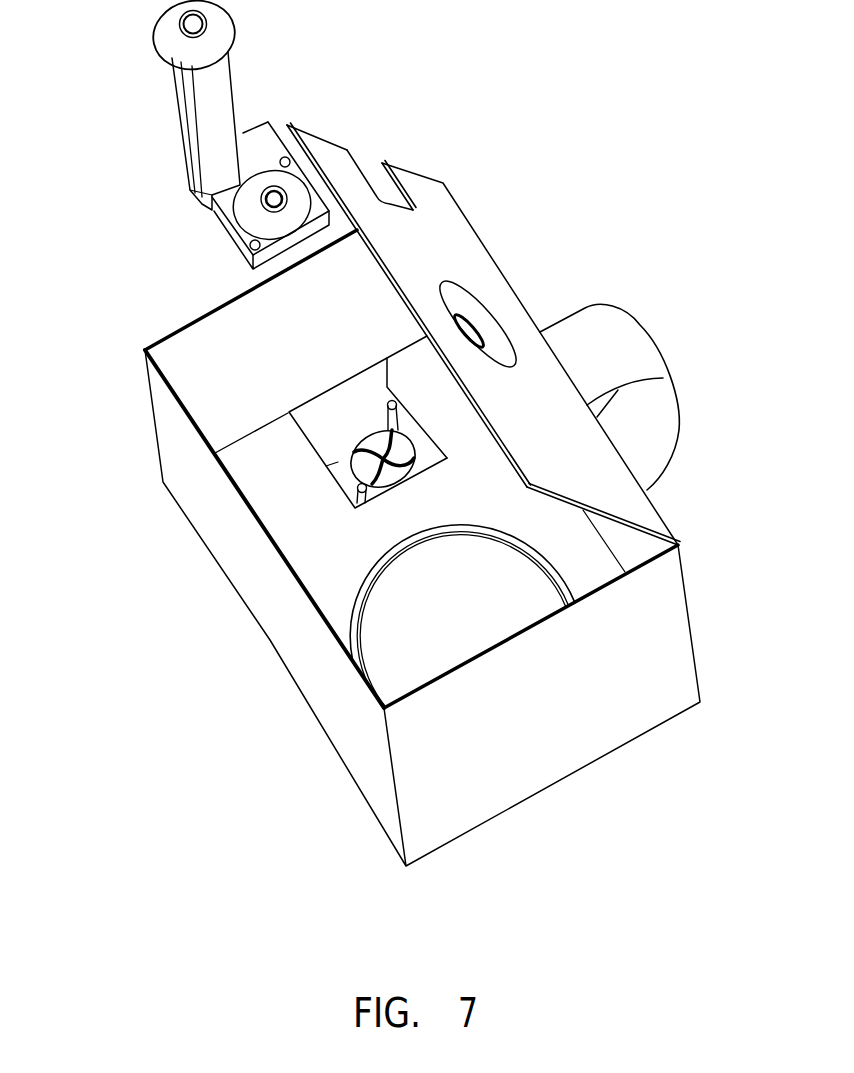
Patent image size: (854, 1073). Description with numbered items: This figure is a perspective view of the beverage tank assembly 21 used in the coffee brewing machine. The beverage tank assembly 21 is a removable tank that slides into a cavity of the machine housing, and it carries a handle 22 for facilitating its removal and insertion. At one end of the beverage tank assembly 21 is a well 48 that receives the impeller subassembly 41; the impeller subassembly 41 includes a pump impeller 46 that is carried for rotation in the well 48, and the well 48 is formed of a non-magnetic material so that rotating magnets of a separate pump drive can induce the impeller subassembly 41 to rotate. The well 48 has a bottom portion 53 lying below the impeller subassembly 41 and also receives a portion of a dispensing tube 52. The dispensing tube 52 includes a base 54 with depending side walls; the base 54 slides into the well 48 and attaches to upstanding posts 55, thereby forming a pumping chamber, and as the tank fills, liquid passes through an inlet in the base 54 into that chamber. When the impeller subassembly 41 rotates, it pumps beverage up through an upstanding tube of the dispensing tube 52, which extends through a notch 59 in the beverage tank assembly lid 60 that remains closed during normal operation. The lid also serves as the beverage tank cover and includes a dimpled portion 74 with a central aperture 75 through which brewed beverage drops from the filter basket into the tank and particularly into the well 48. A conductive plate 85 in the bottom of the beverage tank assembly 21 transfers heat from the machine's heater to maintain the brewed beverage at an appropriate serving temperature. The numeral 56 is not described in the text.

The beverage tank assembly 21 is at (343, 673).
The handle 22 is at (623, 345).
The impeller subassembly 41 is at (345, 443).
The pump impeller 46 is at (330, 465).
The well 48 is at (370, 508).
The dispensing tube 52 is at (220, 113).
The bottom portion 53 is at (353, 474).
The base 54 is at (240, 213).
The upstanding posts 55 is at (343, 423).
The ring fitting 56 is at (263, 196).
The notch 59 is at (390, 200).
The beverage tank assembly lid 60 is at (452, 224).
The dimpled portion 74 is at (460, 284).
The central aperture 75 is at (478, 330).
The conductive plate 85 is at (398, 542).